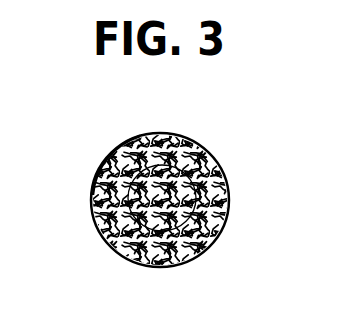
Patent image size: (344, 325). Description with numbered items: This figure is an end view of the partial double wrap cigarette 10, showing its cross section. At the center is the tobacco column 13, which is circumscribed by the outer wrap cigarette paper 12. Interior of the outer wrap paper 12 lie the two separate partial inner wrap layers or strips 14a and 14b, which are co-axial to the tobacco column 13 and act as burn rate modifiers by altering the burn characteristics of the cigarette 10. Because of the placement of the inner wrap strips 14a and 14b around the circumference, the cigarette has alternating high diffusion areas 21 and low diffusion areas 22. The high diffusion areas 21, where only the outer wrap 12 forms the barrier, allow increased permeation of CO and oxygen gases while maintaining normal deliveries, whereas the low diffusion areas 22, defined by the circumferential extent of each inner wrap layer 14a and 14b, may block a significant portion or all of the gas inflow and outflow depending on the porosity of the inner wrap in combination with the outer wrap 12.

The partial double wrap cigarette 10 is at (241, 144).
The outer wrap cigarette paper 12 is at (118, 147).
The tobacco column 13 is at (202, 251).
The partial inner wrap layer 14a is at (91, 202).
The partial inner wrap layer 14b is at (229, 201).
The high diffusion area 21 is at (196, 131).
The low diffusion area 22 is at (80, 184).